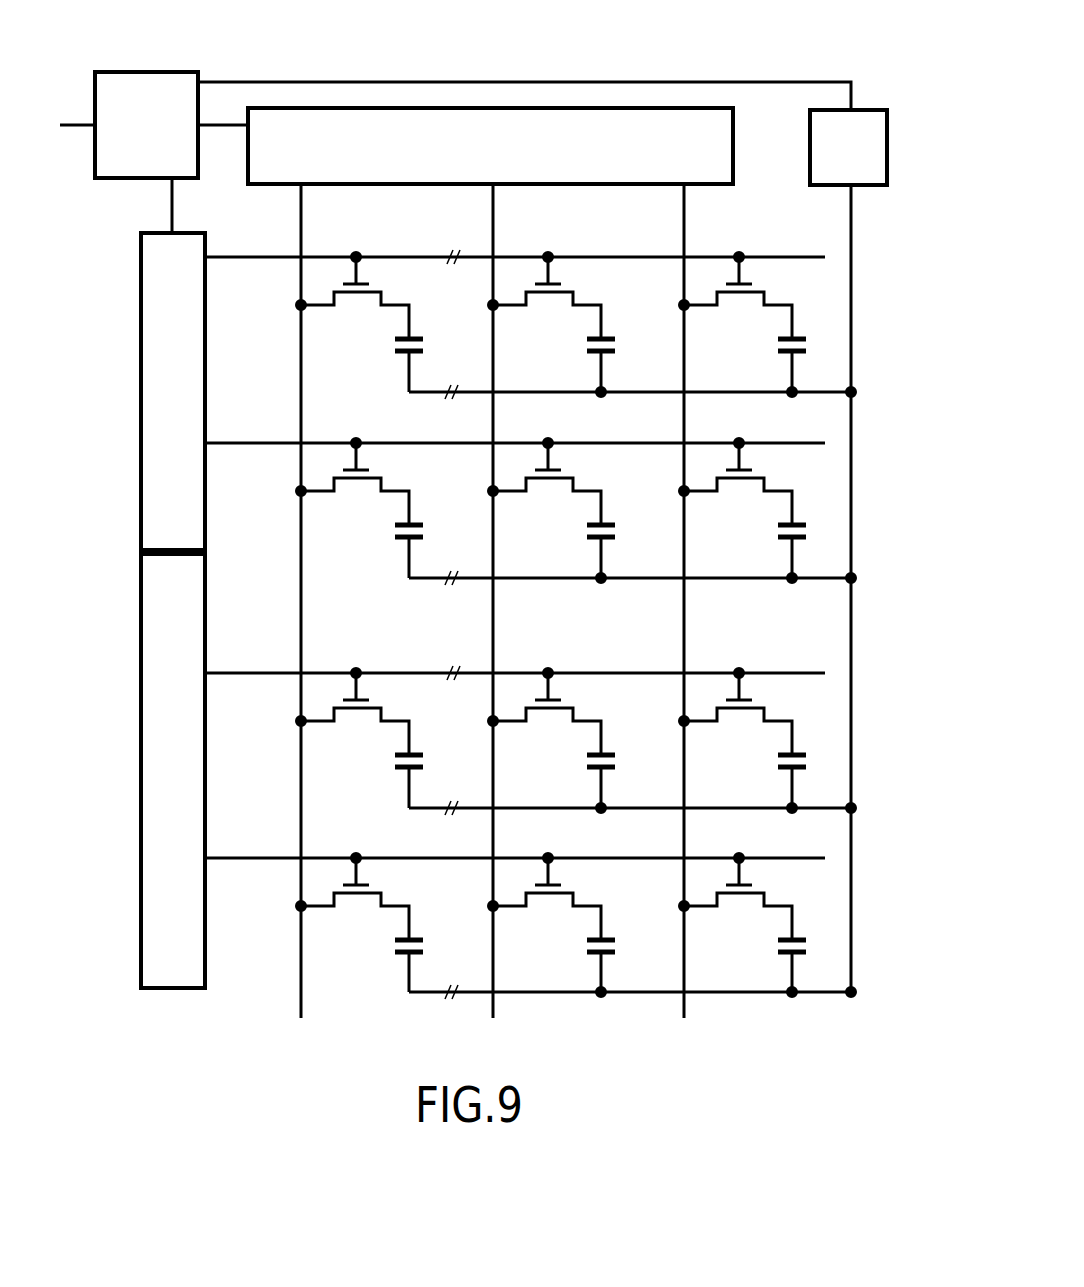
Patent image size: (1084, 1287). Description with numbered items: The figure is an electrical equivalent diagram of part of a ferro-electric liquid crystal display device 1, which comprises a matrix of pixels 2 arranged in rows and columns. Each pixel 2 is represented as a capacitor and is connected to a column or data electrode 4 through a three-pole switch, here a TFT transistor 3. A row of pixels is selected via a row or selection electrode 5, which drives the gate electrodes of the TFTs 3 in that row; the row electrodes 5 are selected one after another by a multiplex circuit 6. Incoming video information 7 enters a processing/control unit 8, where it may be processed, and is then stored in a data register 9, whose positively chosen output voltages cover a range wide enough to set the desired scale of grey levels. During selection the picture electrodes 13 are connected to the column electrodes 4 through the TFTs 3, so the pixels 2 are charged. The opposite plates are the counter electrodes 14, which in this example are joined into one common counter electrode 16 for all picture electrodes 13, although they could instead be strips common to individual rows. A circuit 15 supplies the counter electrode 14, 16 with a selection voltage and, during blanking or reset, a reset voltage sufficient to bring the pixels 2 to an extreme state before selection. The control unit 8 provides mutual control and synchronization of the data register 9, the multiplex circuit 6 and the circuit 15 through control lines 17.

The display device 1 is at (248, 1058).
The pixel 2 is at (430, 346).
The TFT transistor 3 is at (363, 283).
The column electrode 4 is at (301, 217).
The row electrode 5 is at (260, 262).
The multiplex circuit 6 is at (141, 394).
The incoming video information 7 is at (76, 122).
The processing/control unit 8 is at (165, 72).
The data register 9 is at (388, 185).
The picture electrode 13 is at (421, 338).
The counter electrode 14 is at (405, 355).
The circuit 15 is at (870, 108).
The common counter electrode 16 is at (468, 397).
The control line 17 is at (588, 81).